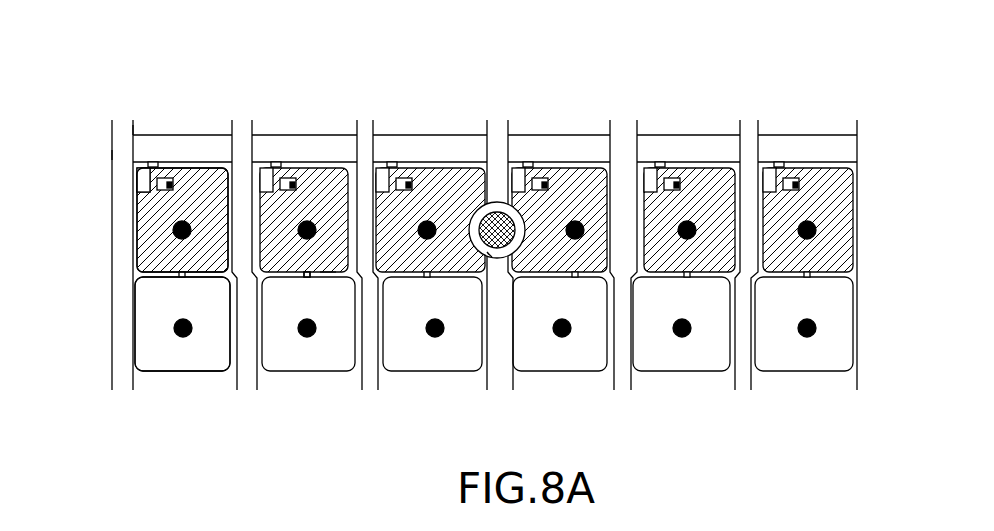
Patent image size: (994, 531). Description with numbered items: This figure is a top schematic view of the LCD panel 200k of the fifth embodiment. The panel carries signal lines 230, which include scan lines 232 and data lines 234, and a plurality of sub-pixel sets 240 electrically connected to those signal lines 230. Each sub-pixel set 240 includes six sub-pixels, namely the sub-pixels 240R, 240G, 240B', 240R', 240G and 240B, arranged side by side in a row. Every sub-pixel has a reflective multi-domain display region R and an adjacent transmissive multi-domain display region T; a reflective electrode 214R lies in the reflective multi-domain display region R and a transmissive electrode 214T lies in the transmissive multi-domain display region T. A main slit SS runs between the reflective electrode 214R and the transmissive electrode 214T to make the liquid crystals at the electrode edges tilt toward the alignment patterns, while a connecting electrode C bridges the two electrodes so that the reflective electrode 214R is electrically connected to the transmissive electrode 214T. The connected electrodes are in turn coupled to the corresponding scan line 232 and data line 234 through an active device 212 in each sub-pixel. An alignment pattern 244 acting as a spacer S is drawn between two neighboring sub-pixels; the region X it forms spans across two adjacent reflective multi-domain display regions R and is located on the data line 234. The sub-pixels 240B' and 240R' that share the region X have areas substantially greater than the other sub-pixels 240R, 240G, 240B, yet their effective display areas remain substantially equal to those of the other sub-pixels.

The signal lines 230 is at (35, 52).
The scan lines 232 is at (147, 148).
The data lines 234 is at (122, 130).
The sub-pixel set 240 is at (433, 57).
The sub-pixel 240R is at (185, 227).
The sub-pixel 240G is at (250, 115).
The sub-pixel 240B' is at (429, 226).
The sub-pixel 240R' is at (564, 226).
The sub-pixel 240B is at (804, 227).
The active device 212 is at (125, 190).
The reflective electrode 214R is at (148, 263).
The transmissive electrode 214T is at (155, 325).
The connecting electrode C is at (308, 273).
The main slit SS is at (326, 274).
The alignment pattern 244 is at (507, 232).
The region X is at (488, 252).
The reflective multi-domain display region R is at (868, 168).
The transmissive multi-domain display region T is at (868, 277).
The LCD panel 200k is at (818, 464).